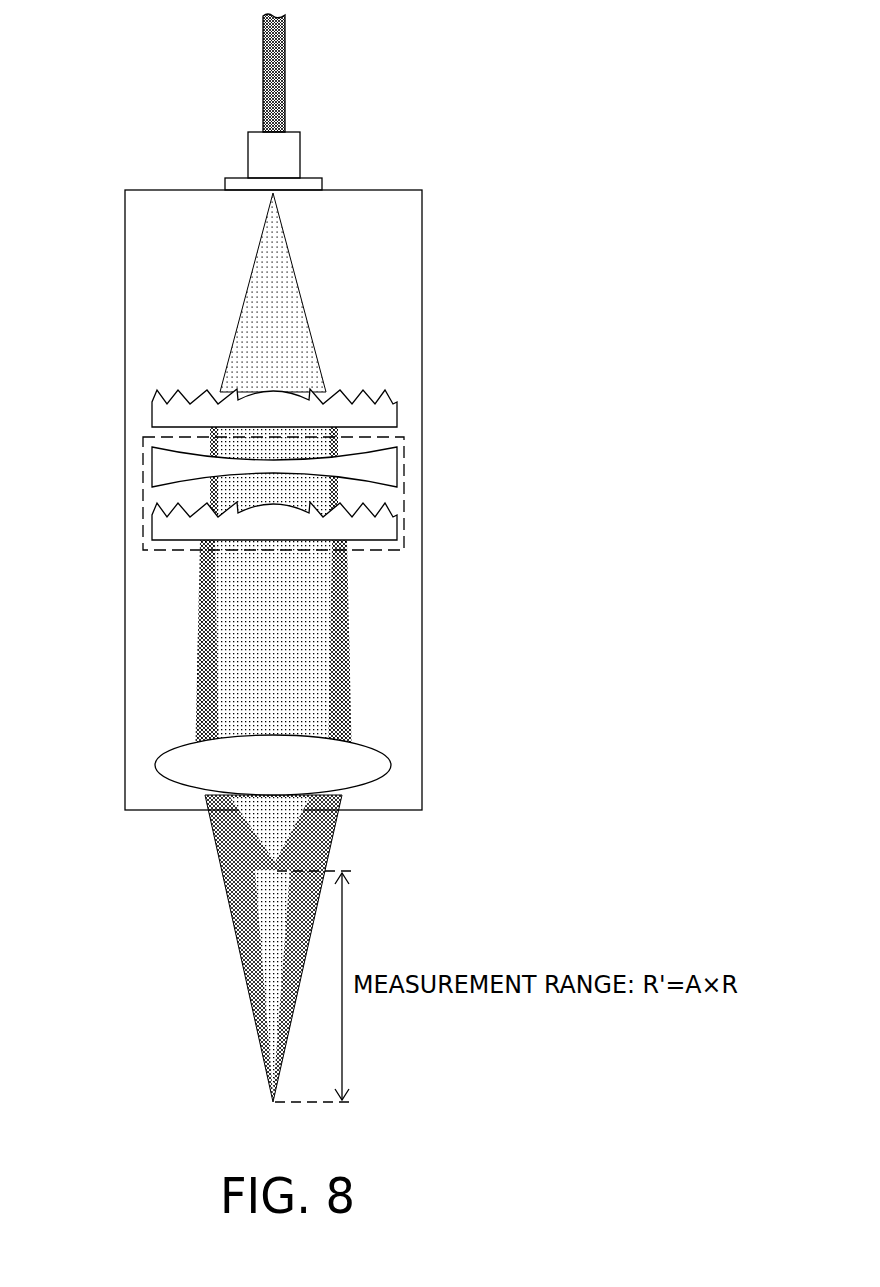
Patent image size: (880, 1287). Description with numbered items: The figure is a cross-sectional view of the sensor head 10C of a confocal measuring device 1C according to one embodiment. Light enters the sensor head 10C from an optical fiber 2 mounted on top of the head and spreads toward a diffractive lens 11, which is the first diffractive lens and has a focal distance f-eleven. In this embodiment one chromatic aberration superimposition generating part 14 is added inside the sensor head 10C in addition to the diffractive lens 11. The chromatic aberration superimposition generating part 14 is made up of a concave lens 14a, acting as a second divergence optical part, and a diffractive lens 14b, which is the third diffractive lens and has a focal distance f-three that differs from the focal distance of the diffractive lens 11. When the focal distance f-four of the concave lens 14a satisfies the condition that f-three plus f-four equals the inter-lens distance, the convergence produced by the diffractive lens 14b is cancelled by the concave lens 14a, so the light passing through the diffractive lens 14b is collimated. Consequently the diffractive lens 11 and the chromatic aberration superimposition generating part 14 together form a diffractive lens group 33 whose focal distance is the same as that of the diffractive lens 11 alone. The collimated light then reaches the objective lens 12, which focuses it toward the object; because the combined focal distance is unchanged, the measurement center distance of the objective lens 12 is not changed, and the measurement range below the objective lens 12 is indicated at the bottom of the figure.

The confocal measuring device 1C is at (292, 558).
The optical fiber 2 is at (286, 50).
The sensor head 10C is at (423, 233).
The diffractive lens 11 is at (383, 413).
The objective lens 12 is at (383, 768).
The chromatic aberration superimposition generating part 14 is at (267, 493).
The concave lens 14a is at (163, 466).
The diffractive lens 14b is at (163, 527).
The diffractive lens group 33 is at (292, 469).